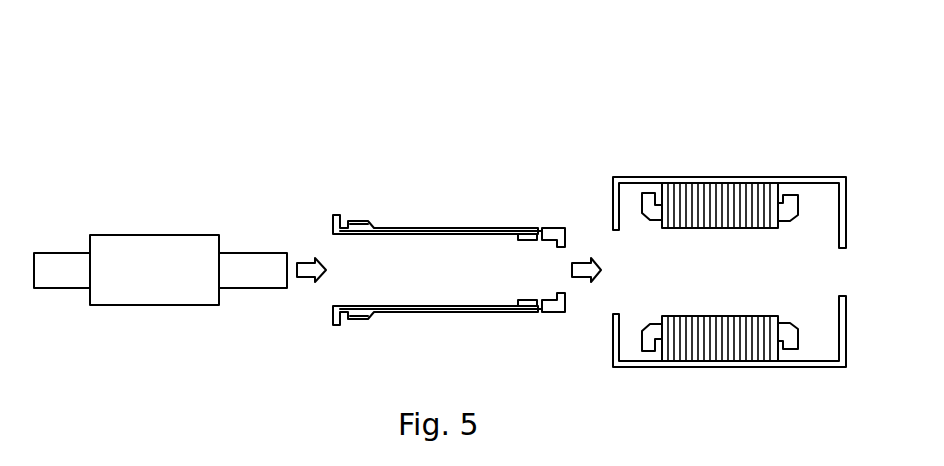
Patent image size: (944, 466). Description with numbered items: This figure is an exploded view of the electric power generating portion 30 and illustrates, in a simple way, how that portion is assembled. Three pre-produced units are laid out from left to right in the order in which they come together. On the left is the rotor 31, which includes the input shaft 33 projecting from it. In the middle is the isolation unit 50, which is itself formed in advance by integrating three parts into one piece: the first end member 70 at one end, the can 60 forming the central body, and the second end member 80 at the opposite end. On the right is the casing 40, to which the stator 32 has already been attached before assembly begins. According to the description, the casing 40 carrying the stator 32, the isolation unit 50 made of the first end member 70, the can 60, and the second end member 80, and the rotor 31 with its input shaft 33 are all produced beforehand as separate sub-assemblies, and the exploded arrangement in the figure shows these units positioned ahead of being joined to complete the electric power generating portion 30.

The electric power generating portion 30 is at (582, 80).
The rotor 31 is at (164, 235).
The stator 32 is at (718, 185).
The input shaft 33 is at (73, 257).
The casing 40 is at (806, 178).
The isolation unit 50 is at (445, 230).
The can 60 is at (413, 227).
The first end member 70 is at (336, 215).
The second end member 80 is at (553, 228).